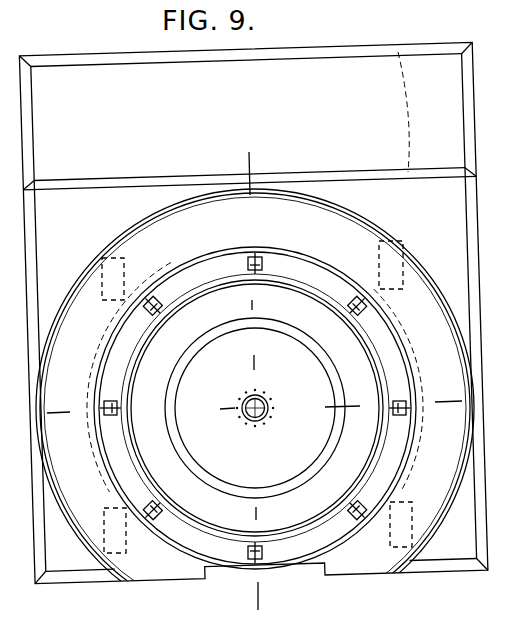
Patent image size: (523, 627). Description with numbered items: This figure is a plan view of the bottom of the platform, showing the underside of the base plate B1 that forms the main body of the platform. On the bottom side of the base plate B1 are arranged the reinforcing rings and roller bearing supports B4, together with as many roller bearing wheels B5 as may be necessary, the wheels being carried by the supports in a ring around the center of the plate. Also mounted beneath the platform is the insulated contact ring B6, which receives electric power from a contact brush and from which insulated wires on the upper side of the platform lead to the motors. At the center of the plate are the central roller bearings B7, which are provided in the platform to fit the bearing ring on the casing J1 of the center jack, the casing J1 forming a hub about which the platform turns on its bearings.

The base plate B1 is at (340, 72).
The reinforcing rings and roller bearing supports B4 is at (470, 105).
The roller bearing wheels B5 is at (390, 395).
The insulated contact ring B6 is at (345, 373).
The central roller bearings B7 is at (271, 406).
The casing J1 is at (250, 392).